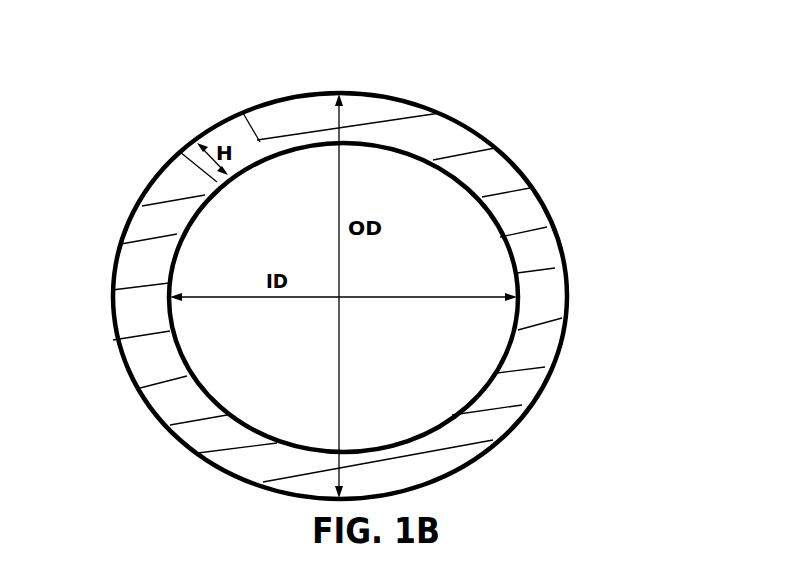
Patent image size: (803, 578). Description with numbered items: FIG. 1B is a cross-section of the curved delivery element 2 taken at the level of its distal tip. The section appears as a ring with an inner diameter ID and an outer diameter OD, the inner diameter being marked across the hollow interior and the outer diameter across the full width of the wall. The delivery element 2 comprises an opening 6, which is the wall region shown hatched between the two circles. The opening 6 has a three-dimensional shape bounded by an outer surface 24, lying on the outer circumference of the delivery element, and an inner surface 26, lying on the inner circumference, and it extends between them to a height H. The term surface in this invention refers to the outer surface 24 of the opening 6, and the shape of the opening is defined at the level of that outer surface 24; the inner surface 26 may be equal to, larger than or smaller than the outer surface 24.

The curved delivery element 2 is at (375, 259).
The opening 6 is at (308, 259).
The outer surface 24 is at (226, 118).
The inner surface 26 is at (248, 175).